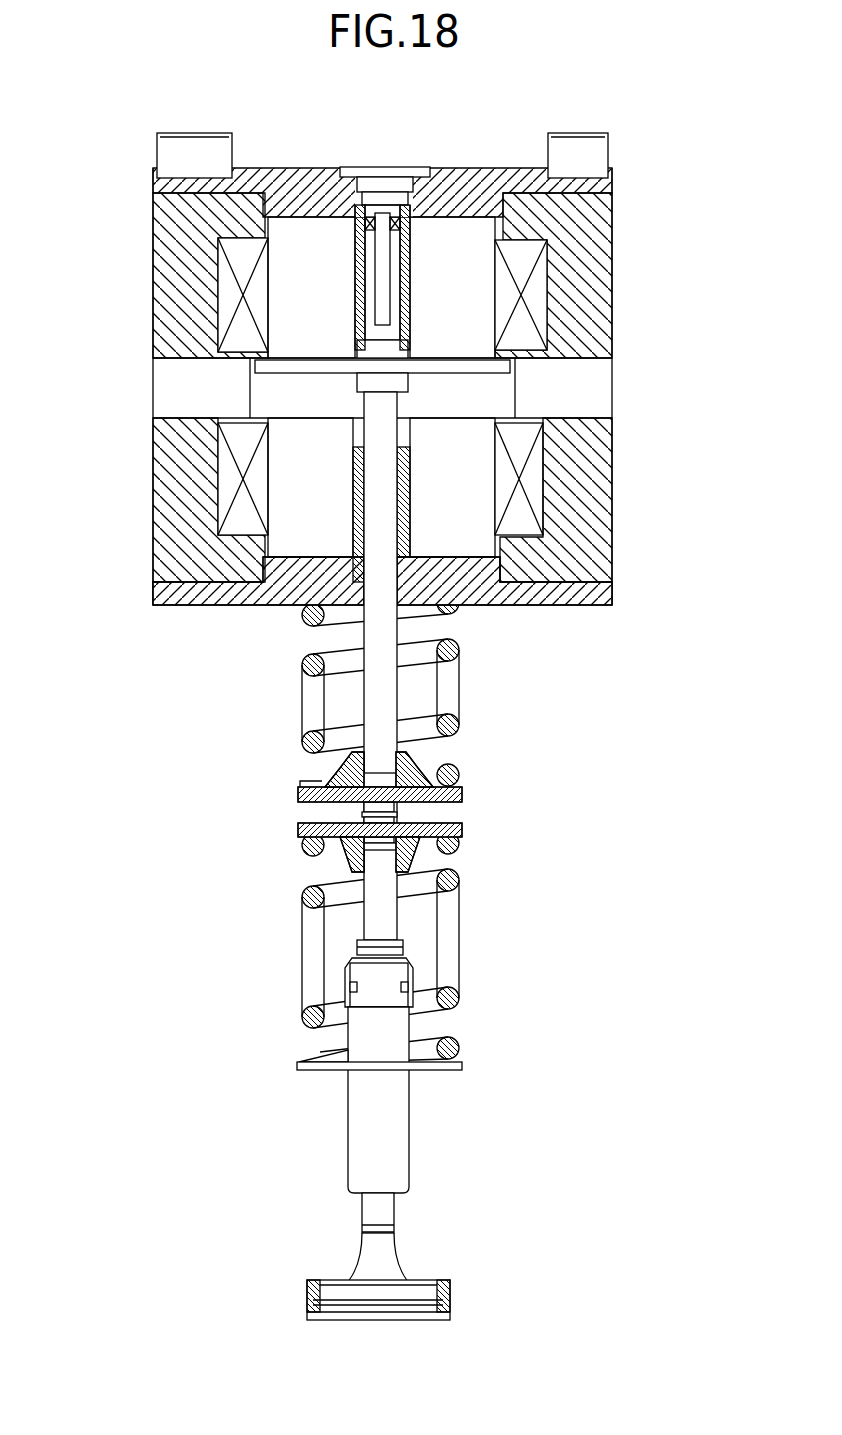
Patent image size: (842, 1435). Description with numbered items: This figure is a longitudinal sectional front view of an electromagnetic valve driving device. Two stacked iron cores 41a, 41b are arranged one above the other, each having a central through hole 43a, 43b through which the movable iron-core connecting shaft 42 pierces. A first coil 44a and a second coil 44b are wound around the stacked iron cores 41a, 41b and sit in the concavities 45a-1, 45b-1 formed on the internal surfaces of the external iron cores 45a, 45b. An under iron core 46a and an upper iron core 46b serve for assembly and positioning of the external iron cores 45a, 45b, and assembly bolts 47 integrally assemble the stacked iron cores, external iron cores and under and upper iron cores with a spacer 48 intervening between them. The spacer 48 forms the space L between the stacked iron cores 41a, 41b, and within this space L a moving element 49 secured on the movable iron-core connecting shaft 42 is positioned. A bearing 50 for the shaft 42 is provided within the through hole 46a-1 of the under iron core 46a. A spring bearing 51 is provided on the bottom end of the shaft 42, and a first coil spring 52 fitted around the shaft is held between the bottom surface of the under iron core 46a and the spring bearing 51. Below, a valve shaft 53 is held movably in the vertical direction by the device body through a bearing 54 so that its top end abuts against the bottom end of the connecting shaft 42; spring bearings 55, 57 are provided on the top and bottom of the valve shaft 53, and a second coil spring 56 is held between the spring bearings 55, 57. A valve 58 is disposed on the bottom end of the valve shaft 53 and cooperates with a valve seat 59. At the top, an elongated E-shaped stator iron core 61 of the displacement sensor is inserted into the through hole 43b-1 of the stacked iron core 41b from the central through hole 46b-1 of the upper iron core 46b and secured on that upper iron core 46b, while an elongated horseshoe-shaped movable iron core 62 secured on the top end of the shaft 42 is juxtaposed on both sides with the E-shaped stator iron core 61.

The stacked iron core 41a is at (296, 462).
The stacked iron core 41b is at (468, 232).
The movable iron-core connecting shaft 42 is at (381, 638).
The through hole 43a is at (404, 437).
The through hole 43b is at (404, 333).
The through hole 43b-1 is at (404, 270).
The first coil 44a is at (538, 487).
The second coil 44b is at (538, 298).
The external iron core 45a is at (166, 540).
The concavity 45a-1 is at (226, 487).
The external iron core 45b is at (166, 241).
The concavity 45b-1 is at (226, 282).
The under iron core 46a is at (166, 595).
The through hole 46a-1 is at (440, 598).
The upper iron core 46b is at (282, 176).
The central through hole 46b-1 is at (410, 196).
The assembly bolt 47 is at (190, 143).
The spacer 48 is at (603, 372).
The moving element 49 is at (256, 363).
The bearing 50 is at (500, 548).
The spring bearing 51 is at (462, 793).
The first coil spring 52 is at (456, 720).
The valve shaft 53 is at (385, 918).
The bearing 54 is at (400, 1143).
The spring bearing 55 is at (462, 831).
The second coil spring 56 is at (452, 997).
The spring bearing 57 is at (462, 1066).
The valve 58 is at (420, 1323).
The valve seat 59 is at (450, 1283).
The E-shaped stator iron core 61 is at (330, 176).
The horseshoe-shaped movable iron core 62 is at (360, 300).
The space L is at (573, 401).